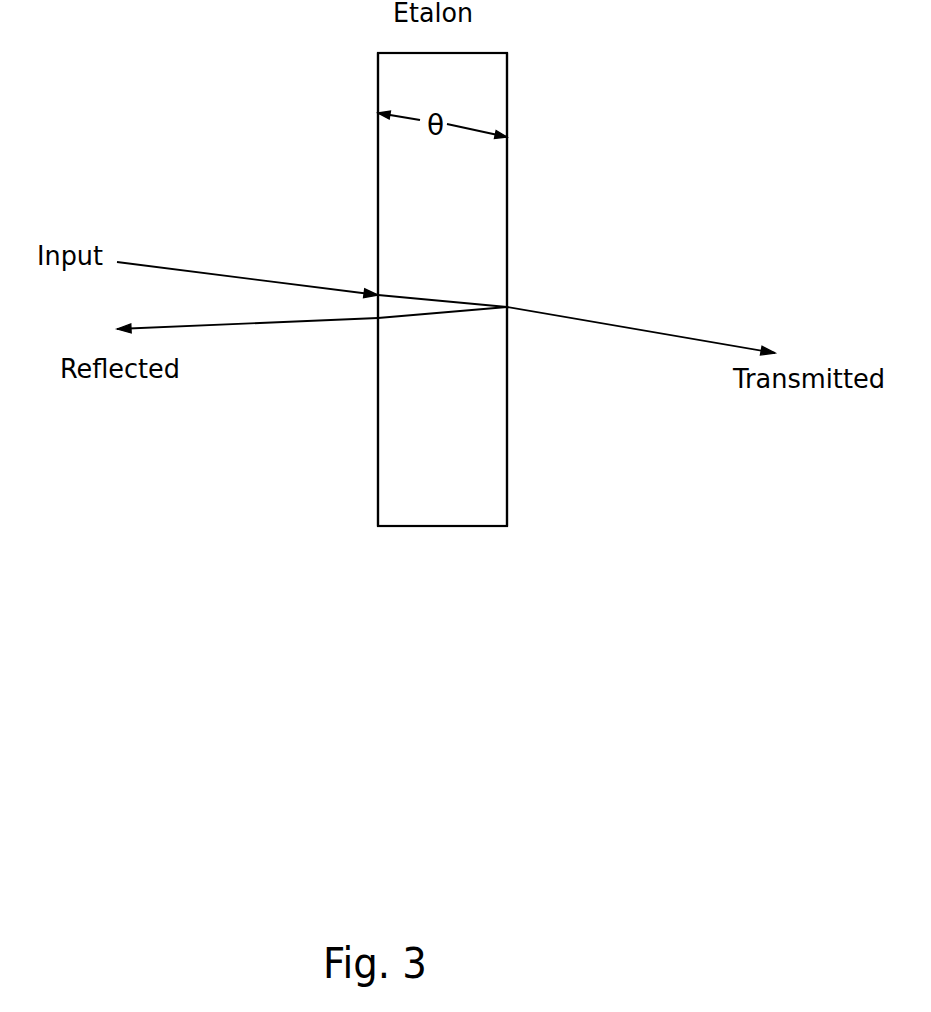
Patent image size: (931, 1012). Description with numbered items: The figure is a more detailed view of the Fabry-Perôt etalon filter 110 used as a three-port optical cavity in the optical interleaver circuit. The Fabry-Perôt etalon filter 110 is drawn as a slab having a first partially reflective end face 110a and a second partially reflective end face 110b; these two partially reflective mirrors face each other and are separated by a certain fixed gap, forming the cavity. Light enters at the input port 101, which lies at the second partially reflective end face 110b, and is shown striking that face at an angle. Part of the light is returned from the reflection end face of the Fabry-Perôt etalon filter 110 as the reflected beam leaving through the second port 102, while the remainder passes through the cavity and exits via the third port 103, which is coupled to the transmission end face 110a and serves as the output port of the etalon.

The input port 101 is at (375, 290).
The second port 102 is at (378, 320).
The third port 103 is at (507, 303).
The Fabry-Perôt etalon filter 110 is at (565, 502).
The first partially reflective end face 110a is at (507, 90).
The second partially reflective end face 110b is at (378, 85).